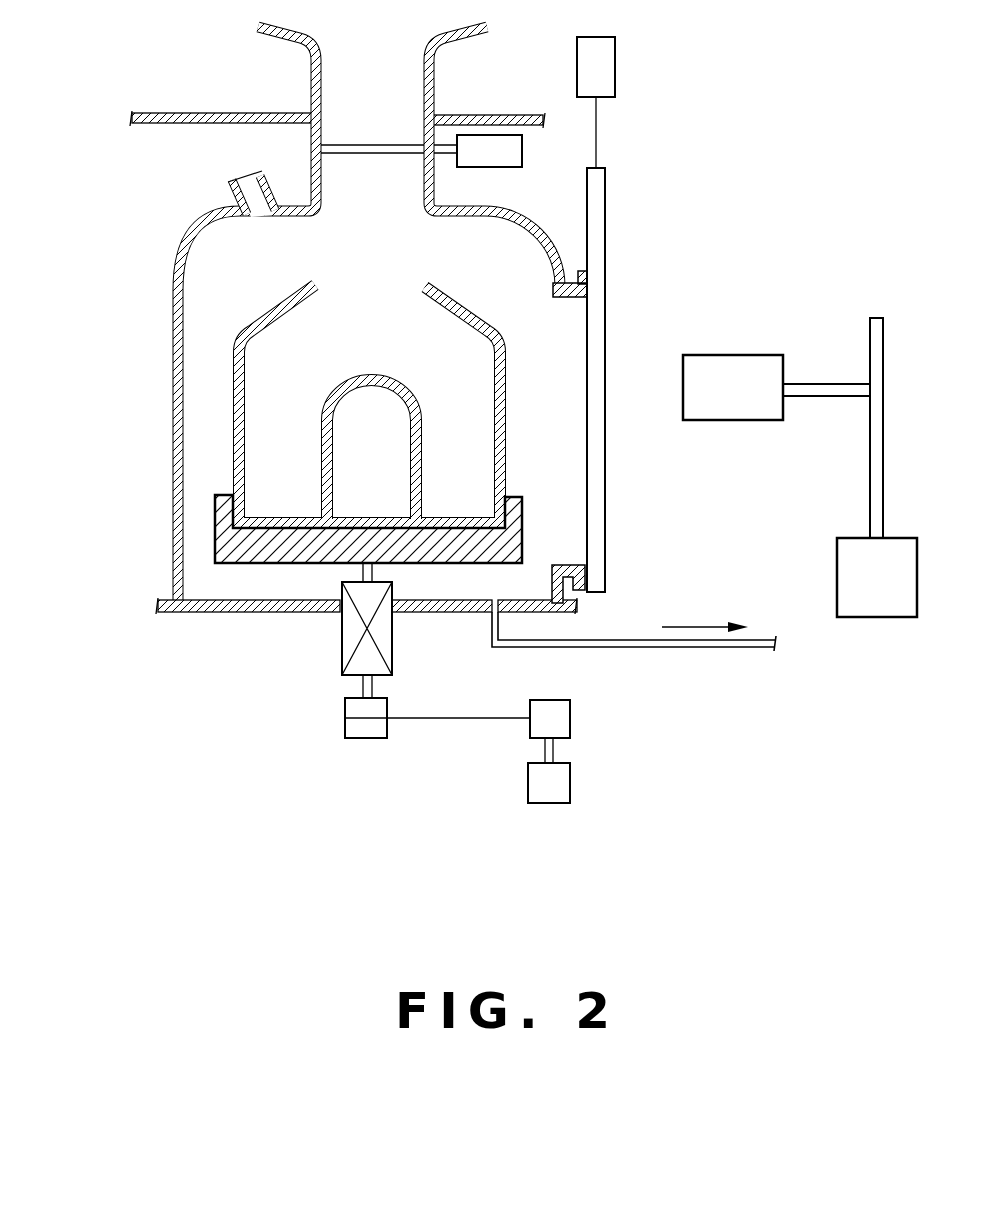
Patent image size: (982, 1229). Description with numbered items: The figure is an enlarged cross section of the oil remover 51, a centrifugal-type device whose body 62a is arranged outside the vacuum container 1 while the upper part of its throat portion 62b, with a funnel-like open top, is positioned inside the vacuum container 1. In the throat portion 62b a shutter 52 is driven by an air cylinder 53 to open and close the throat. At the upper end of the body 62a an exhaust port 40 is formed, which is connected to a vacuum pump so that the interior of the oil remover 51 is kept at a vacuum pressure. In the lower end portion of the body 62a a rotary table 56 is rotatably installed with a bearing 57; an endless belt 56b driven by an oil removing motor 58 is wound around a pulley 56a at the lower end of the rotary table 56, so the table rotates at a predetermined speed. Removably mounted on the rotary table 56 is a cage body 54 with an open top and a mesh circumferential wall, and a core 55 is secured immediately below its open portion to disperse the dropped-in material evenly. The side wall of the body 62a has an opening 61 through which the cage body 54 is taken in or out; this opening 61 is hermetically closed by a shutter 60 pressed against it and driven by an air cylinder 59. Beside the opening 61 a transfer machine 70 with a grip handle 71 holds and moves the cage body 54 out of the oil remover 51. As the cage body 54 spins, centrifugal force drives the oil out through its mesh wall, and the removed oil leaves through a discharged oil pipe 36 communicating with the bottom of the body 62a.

The vacuum container 1 is at (165, 124).
The discharged oil pipe 36 is at (645, 650).
The exhaust port 40 is at (233, 174).
The oil remover 51 is at (128, 429).
The shutter 52 is at (370, 146).
The air cylinder 53 is at (517, 155).
The cage body 54 is at (233, 370).
The core 55 is at (323, 462).
The rotary table 56 is at (228, 548).
The pulley 56a is at (367, 729).
The endless belt 56b is at (460, 720).
The bearing 57 is at (345, 643).
The oil removing motor 58 is at (560, 784).
The air cylinder 59 is at (605, 70).
The shutter 60 is at (598, 328).
The opening 61 is at (572, 565).
The body 62a is at (175, 286).
The throat portion 62b is at (313, 90).
The transfer machine 70 is at (852, 549).
The grip handle 71 is at (738, 370).